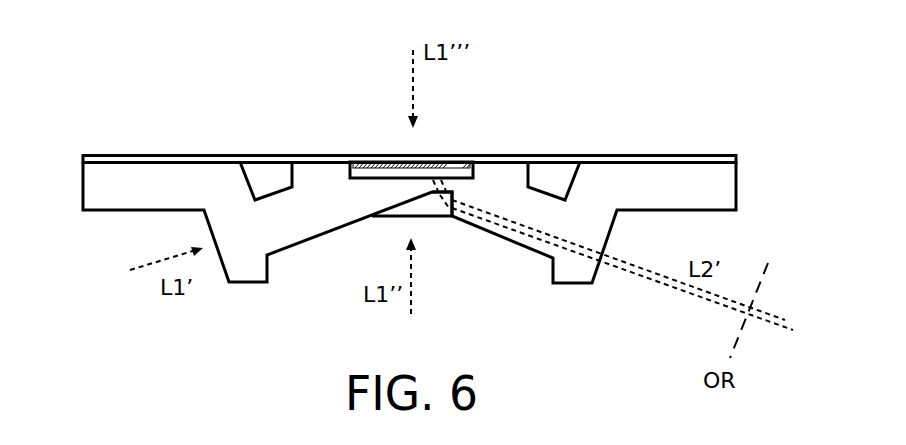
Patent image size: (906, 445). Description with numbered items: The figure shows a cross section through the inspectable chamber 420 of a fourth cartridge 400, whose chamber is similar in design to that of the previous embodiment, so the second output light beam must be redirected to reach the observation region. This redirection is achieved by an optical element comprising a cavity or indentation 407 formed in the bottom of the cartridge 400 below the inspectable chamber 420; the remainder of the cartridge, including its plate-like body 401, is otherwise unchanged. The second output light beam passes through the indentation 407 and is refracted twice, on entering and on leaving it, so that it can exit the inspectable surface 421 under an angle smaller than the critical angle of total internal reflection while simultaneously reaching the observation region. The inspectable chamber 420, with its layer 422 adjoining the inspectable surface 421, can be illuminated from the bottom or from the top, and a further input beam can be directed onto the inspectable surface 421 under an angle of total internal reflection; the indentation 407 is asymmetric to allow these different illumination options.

The fourth cartridge 400 is at (647, 140).
The light guide plate 401 is at (145, 180).
The indentation 407 is at (435, 207).
The inspectable chamber 420 is at (395, 176).
The inspectable surface 421 is at (461, 159).
The light emitting layer 422 is at (362, 163).